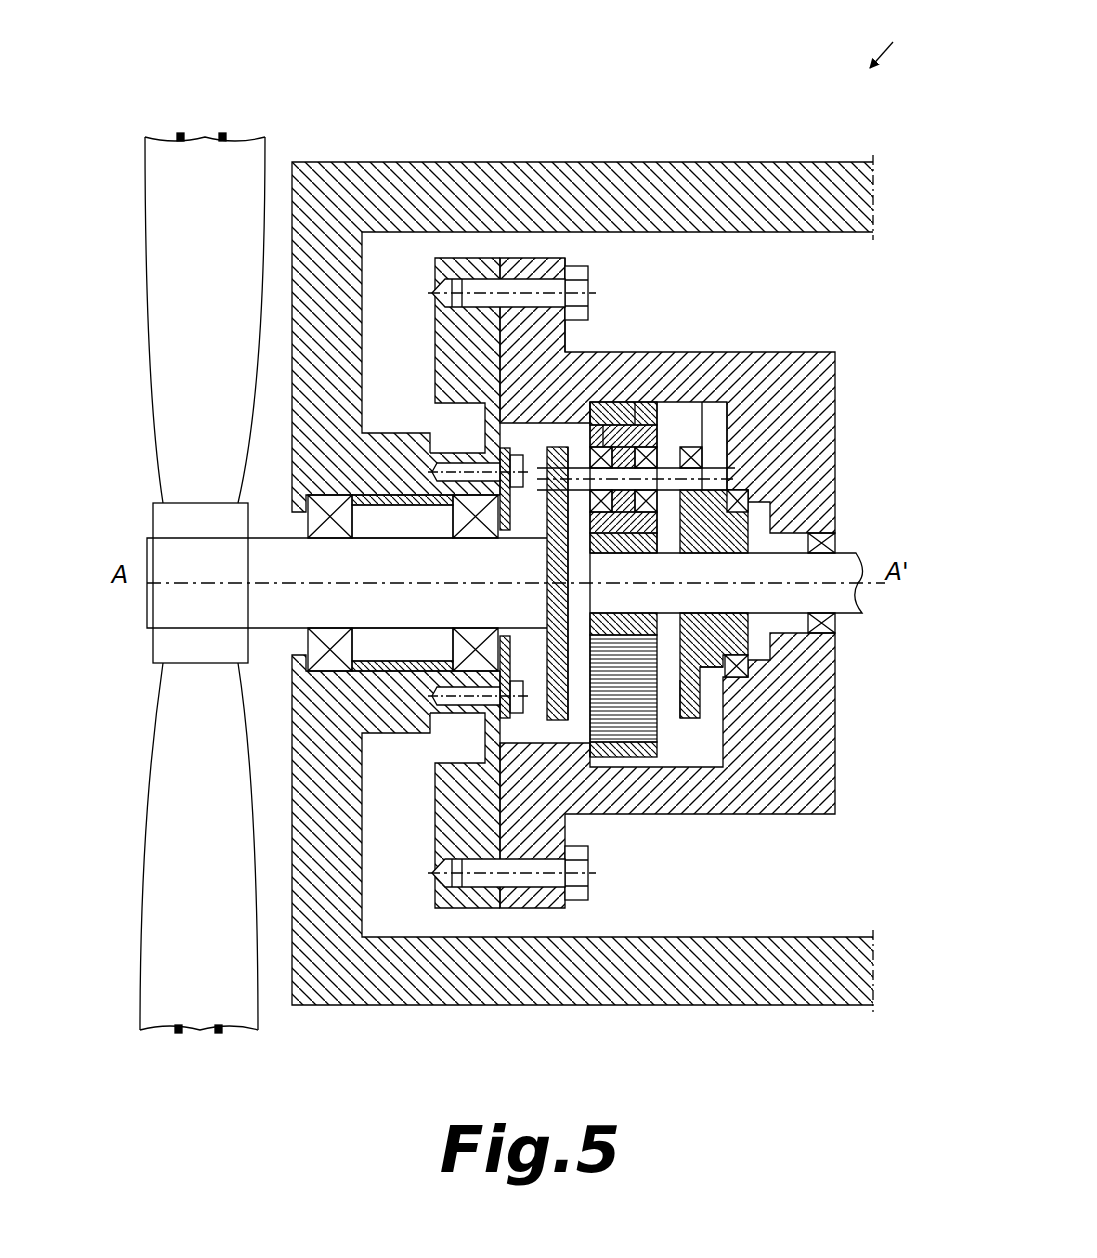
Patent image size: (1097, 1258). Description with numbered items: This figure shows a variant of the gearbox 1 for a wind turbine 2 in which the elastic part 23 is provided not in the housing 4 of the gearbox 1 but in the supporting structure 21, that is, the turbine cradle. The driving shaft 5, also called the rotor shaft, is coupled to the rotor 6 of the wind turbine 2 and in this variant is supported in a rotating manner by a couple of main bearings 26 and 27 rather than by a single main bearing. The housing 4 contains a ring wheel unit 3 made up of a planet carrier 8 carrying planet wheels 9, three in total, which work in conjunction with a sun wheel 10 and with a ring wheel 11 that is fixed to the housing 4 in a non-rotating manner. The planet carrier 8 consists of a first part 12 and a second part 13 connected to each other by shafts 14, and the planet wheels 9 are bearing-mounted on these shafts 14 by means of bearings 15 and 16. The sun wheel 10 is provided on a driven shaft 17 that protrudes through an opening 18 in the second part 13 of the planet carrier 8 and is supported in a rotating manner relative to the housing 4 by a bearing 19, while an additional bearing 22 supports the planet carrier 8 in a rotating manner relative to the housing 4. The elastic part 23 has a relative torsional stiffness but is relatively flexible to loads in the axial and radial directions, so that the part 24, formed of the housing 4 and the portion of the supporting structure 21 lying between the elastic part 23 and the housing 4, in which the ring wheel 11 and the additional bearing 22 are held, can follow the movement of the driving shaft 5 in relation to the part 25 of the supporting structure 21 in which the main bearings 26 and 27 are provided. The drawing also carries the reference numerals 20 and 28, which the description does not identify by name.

The gearbox 1 is at (888, 38).
The wind turbine 2 is at (128, 693).
The ring wheel unit 3 is at (690, 760).
The housing 4 is at (822, 414).
The driving shaft 5 is at (155, 600).
The rotor 6 is at (162, 437).
The planet carrier 8 is at (690, 683).
The planet wheels 9 is at (650, 500).
The sun wheel 10 is at (706, 445).
The ring wheel 11 is at (723, 712).
The first part 12 is at (565, 722).
The second part 13 is at (690, 730).
The shafts 14 is at (742, 440).
The bearing 15 is at (612, 420).
The bearing 16 is at (665, 435).
The driven shaft 17 is at (860, 608).
The opening 18 is at (733, 662).
The bearing 19 is at (812, 535).
The bolt 20 is at (586, 287).
The supporting structure 21 is at (836, 996).
The additional bearing 22 is at (740, 492).
The elastic part 23 is at (512, 428).
The part 24 is at (540, 260).
The part 25 is at (382, 443).
The main bearing 26 is at (500, 690).
The main bearing 27 is at (462, 668).
The bearing carrier 28 is at (440, 328).